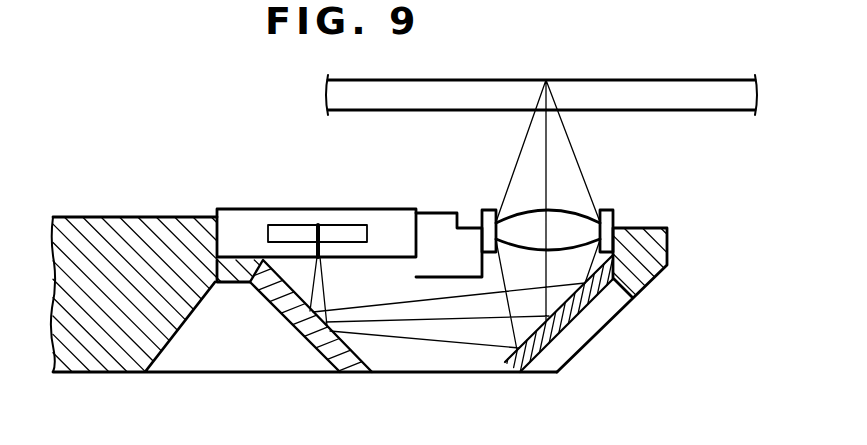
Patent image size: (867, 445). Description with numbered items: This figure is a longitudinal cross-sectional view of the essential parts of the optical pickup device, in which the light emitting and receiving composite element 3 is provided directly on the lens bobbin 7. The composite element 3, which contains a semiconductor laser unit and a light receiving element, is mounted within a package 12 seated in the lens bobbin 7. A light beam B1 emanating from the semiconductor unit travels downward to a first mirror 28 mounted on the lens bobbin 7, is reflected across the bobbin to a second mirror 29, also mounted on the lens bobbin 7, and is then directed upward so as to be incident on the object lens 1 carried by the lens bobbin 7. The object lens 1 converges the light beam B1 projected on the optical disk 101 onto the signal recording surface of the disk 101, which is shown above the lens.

The object lens 1 is at (583, 220).
The light emitting and receiving composite element 3 is at (333, 228).
The lens bobbin 7 is at (118, 232).
The package 12 is at (248, 223).
The first mirror 28 is at (320, 343).
The second mirror 29 is at (582, 303).
The optical disk 101 is at (673, 97).
The light beam B1 is at (442, 340).